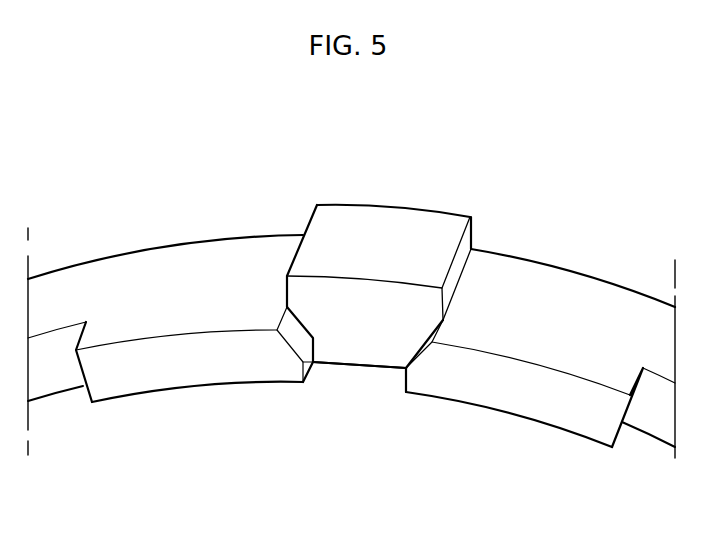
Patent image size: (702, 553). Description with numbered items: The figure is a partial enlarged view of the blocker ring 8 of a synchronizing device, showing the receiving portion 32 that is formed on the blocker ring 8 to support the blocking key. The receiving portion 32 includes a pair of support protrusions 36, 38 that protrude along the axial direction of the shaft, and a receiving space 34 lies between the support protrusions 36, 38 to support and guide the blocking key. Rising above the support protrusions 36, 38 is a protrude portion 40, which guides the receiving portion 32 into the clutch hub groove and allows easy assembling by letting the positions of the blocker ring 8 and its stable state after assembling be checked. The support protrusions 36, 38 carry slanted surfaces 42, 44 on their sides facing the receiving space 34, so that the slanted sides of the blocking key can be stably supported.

The blocker ring 8 is at (593, 290).
The receiving portion 32 is at (333, 415).
The receiving space 34 is at (365, 379).
The support protrusion 36 is at (167, 382).
The support protrusion 38 is at (510, 405).
The protrude portion 40 is at (397, 217).
The slanted surface 42 is at (291, 338).
The slanted surface 44 is at (409, 346).